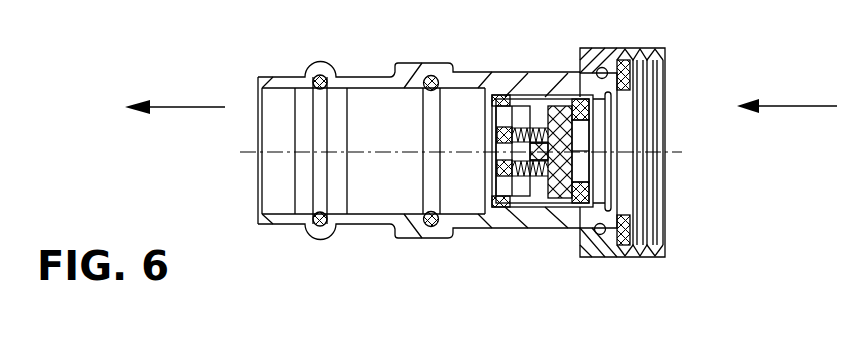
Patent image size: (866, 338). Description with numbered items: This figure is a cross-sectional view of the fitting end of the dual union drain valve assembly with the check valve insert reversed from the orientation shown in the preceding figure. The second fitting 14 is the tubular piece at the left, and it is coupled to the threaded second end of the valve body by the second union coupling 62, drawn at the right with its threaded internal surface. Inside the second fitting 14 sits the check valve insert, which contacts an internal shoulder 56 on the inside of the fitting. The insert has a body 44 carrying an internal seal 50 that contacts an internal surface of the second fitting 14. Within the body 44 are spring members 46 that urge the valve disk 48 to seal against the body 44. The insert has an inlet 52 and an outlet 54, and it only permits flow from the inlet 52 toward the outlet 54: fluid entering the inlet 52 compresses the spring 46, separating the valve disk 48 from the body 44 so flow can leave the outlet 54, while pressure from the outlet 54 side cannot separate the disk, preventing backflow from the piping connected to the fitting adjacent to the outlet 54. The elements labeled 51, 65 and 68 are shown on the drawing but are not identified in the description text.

The second fitting 14 is at (457, 72).
The body 44 is at (540, 97).
The spring member 46 is at (535, 195).
The valve disk 48 is at (520, 203).
The internal seal 50 is at (592, 102).
The seal 51 is at (587, 190).
The inlet 52 is at (580, 163).
The outlet 54 is at (503, 112).
The internal shoulder 56 is at (492, 97).
The second union coupling 62 is at (628, 45).
The lower pin 65 is at (606, 236).
The upper pin 68 is at (607, 72).